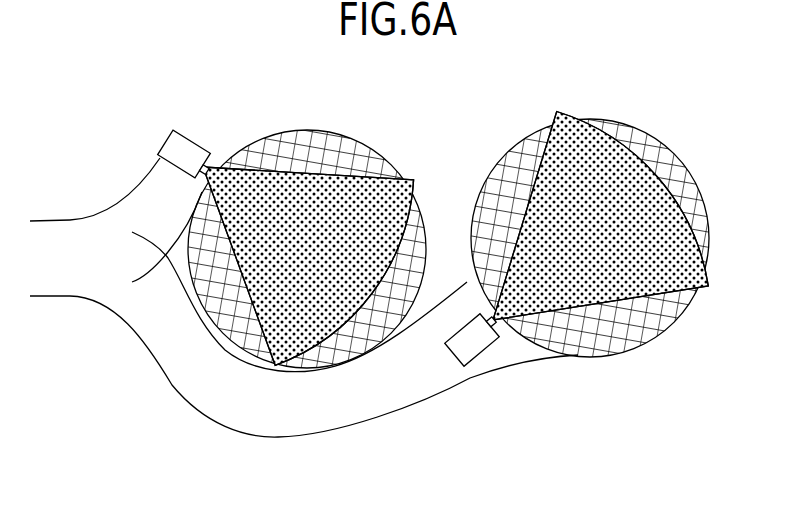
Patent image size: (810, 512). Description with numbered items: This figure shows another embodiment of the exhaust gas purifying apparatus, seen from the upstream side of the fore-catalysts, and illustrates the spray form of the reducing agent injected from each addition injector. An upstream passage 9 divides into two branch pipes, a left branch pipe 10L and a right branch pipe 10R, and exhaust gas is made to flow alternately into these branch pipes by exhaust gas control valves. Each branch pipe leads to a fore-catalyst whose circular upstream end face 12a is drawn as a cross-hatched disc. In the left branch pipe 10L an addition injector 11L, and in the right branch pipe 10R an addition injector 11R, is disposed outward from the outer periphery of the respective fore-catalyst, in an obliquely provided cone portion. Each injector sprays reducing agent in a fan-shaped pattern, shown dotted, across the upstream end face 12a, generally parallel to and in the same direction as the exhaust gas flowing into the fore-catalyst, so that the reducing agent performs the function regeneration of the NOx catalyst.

The common flow path 9 is at (45, 297).
The branch pipe 10L is at (148, 166).
The branch pipe 10R is at (275, 437).
The addition injector 11L is at (200, 147).
The addition injector 11R is at (488, 348).
The upstream end face 12a is at (318, 137).